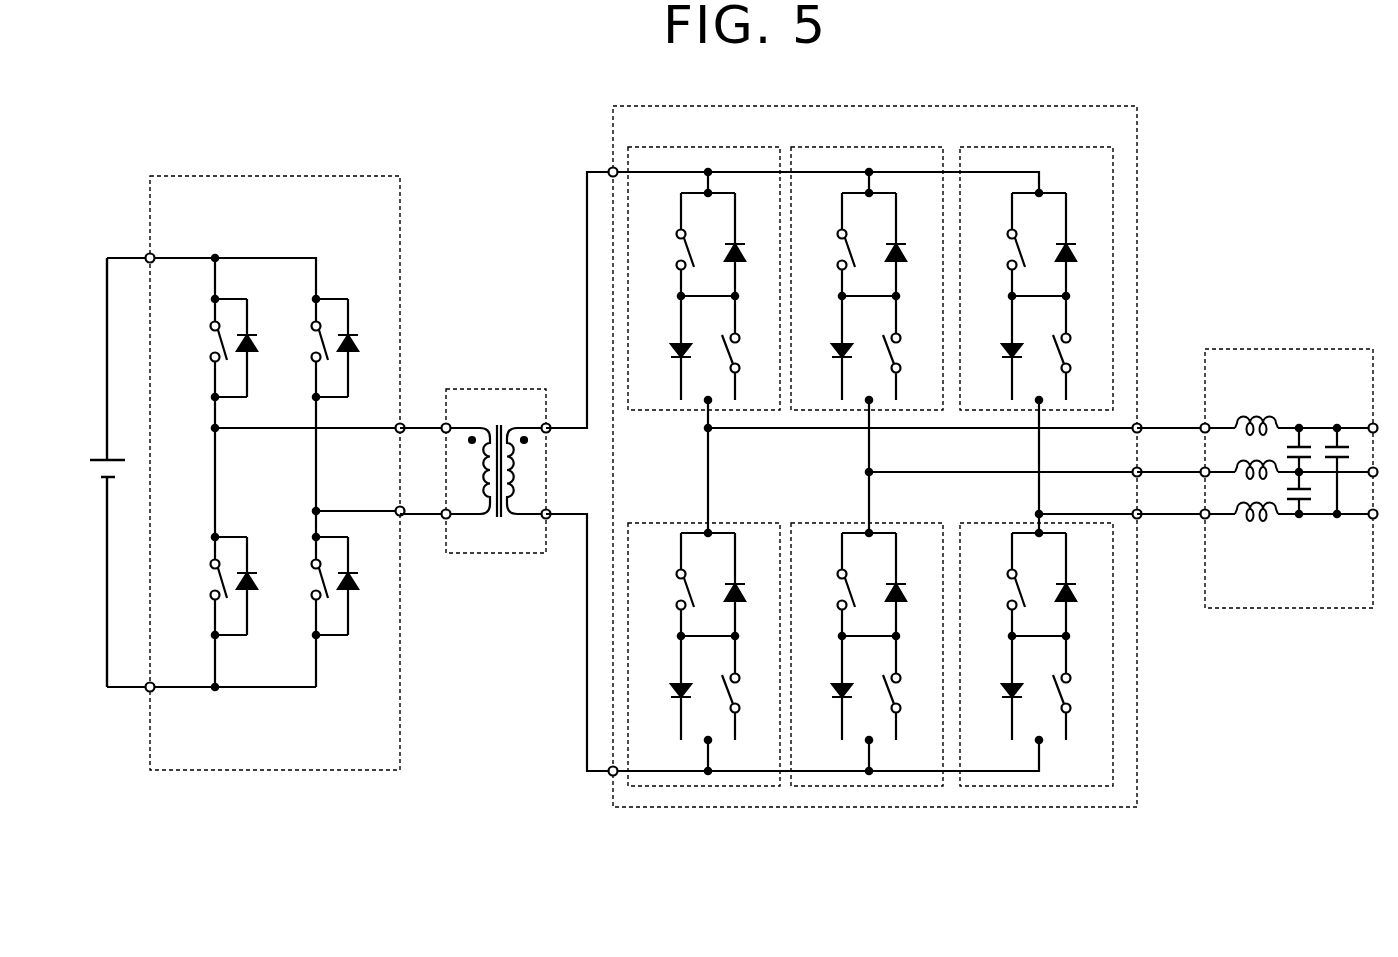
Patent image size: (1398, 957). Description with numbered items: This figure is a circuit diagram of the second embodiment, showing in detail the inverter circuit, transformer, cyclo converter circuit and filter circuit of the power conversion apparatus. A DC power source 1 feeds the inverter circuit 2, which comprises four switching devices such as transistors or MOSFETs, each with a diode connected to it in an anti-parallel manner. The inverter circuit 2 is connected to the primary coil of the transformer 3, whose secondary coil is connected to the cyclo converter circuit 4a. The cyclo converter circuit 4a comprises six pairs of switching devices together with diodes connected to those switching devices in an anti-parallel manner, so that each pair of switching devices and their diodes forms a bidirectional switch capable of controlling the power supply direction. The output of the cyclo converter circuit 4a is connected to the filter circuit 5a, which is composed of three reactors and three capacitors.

The DC power source 1 is at (114, 459).
The inverter circuit 2 is at (312, 176).
The transformer 3 is at (470, 389).
The cyclo converter circuit 4a is at (985, 106).
The filter circuit 5a is at (1250, 349).